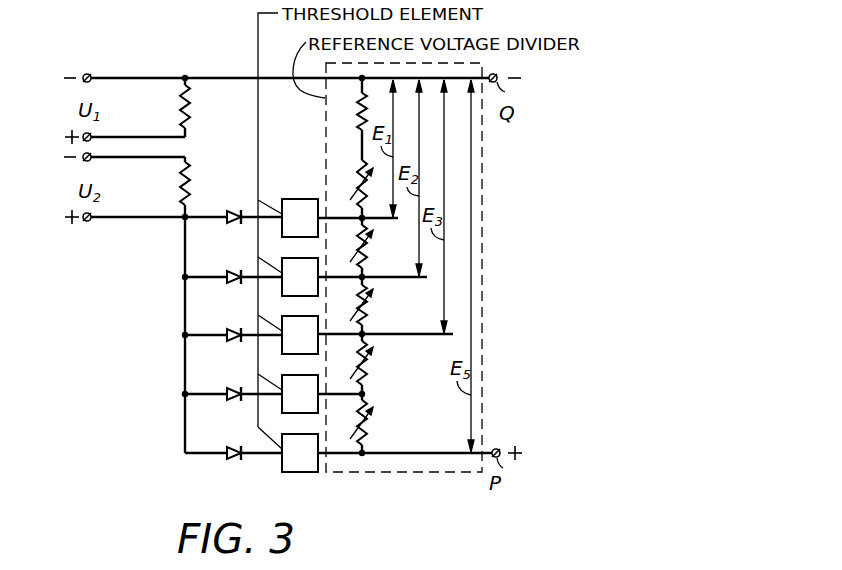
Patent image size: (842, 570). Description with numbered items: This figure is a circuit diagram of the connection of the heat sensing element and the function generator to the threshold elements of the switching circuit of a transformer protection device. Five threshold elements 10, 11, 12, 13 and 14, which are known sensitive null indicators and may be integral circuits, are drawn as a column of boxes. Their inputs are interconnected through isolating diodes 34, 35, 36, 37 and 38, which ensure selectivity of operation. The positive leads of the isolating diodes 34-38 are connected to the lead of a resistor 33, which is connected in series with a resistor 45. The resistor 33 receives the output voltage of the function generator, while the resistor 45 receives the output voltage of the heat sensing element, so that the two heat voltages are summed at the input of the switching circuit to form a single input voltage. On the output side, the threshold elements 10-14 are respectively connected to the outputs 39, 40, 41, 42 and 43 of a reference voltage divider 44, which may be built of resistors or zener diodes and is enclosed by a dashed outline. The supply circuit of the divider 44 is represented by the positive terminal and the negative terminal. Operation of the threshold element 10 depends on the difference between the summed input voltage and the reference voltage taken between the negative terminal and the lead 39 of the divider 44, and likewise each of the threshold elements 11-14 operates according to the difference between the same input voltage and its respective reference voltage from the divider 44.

The threshold element 10 is at (301, 218).
The threshold element 11 is at (301, 277).
The threshold element 12 is at (301, 335).
The threshold element 13 is at (301, 394).
The threshold element 14 is at (301, 453).
The resistor 33 is at (190, 180).
The isolating diode 34 is at (236, 209).
The isolating diode 35 is at (236, 269).
The isolating diode 36 is at (236, 327).
The isolating diode 37 is at (236, 386).
The isolating diode 38 is at (236, 445).
The output of reference voltage divider 39 is at (351, 186).
The output of reference voltage divider 40 is at (351, 249).
The output of reference voltage divider 41 is at (351, 308).
The output of reference voltage divider 42 is at (351, 368).
The output of reference voltage divider 43 is at (351, 427).
The reference voltage divider 44 is at (320, 136).
The resistor 45 is at (190, 104).